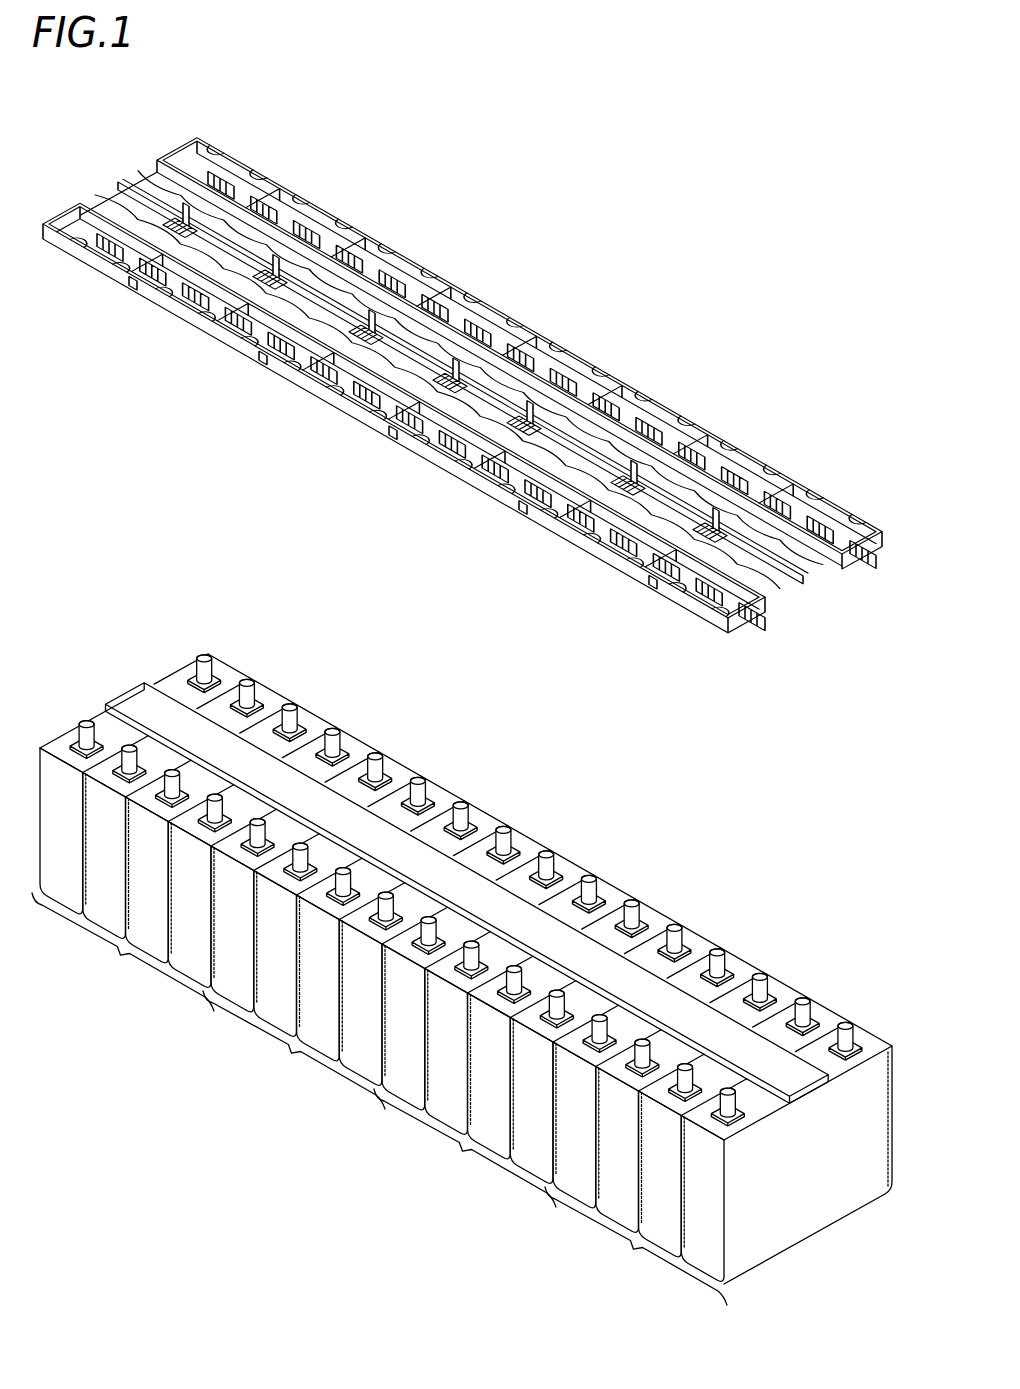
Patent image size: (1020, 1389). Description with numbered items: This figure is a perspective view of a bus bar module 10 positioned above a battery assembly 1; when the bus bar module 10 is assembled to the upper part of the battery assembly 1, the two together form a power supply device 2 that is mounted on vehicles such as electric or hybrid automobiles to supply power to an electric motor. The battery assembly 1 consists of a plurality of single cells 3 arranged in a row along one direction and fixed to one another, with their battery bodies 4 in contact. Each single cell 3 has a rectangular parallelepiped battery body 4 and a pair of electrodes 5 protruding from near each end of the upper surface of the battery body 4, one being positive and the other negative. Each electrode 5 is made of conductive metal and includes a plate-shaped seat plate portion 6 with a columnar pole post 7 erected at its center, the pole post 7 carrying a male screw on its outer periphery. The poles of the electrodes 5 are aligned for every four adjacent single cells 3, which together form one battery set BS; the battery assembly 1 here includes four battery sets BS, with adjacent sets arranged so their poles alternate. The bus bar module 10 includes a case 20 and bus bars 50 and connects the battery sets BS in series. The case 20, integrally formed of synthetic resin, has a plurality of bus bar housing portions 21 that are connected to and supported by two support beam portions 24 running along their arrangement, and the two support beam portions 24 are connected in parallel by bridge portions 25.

The battery assembly 1 is at (461, 928).
The power supply device 2 is at (462, 387).
The single cell 3 is at (447, 802).
The battery body 4 is at (157, 683).
The electrode 5 is at (125, 655).
The seat plate portion 6 is at (193, 677).
The pole post 7 is at (200, 655).
The bus bar module 10 is at (462, 387).
The case 20 is at (462, 387).
The bus bar housing portion 21 is at (375, 228).
The support beam portion 24 is at (253, 235).
The bridge portion 25 is at (180, 227).
The bus bar 50 is at (300, 205).
The battery set BS is at (462, 979).